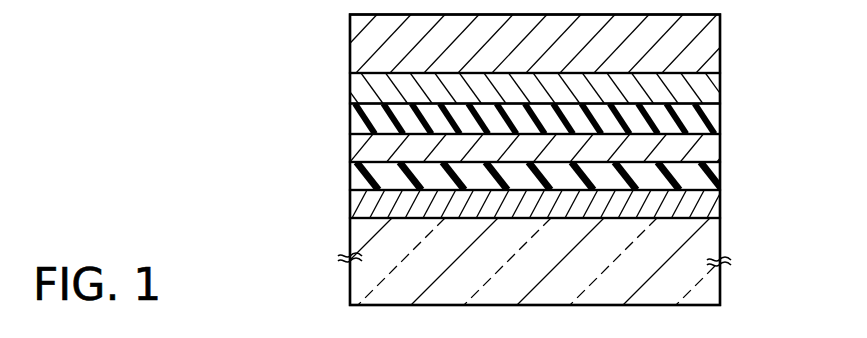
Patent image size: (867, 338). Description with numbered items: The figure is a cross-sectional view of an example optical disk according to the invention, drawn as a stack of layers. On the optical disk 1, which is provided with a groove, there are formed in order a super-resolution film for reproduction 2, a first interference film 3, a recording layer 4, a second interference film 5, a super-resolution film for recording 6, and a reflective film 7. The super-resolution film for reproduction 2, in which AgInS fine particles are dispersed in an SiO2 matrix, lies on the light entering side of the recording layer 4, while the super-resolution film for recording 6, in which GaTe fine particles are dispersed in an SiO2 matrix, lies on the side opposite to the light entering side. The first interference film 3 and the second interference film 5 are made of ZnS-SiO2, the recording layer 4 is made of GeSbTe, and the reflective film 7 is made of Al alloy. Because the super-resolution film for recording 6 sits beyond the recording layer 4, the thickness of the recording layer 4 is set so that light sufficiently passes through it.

The optical disk 1 is at (721, 244).
The super-resolution film for reproduction 2 is at (721, 208).
The first interference film 3 is at (721, 178).
The recording layer 4 is at (721, 146).
The second interference film 5 is at (721, 116).
The super-resolution film for recording 6 is at (721, 88).
The reflective film 7 is at (721, 40).